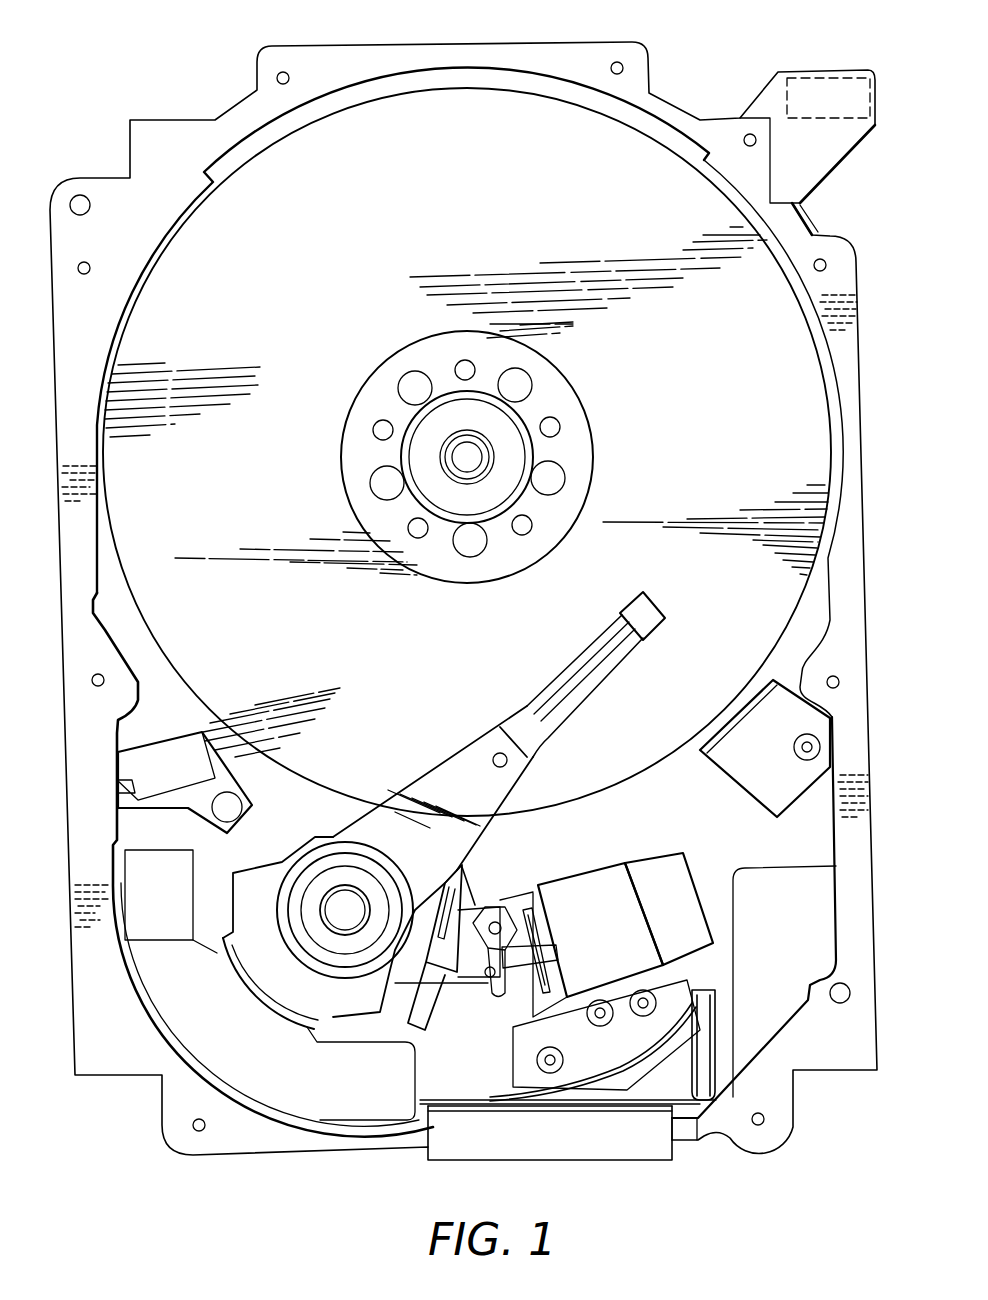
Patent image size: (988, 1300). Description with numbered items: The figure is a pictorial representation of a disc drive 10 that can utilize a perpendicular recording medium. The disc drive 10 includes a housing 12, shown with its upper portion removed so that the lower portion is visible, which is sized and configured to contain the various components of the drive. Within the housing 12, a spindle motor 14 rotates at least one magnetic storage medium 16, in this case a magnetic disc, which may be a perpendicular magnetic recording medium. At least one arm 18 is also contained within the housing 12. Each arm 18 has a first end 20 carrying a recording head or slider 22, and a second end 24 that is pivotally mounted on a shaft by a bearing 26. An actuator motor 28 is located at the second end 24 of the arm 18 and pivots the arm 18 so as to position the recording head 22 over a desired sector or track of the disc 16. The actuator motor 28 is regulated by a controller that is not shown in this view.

The disc drive 10 is at (104, 106).
The base deck 12 is at (597, 55).
The spindle motor 14 is at (462, 460).
The disc 16 is at (370, 240).
The actuator arm 18 is at (462, 777).
The flexure suspension 20 is at (583, 650).
The read/write head 22 is at (642, 613).
The actuator body 24 is at (370, 843).
The pivot bearing 26 is at (333, 898).
The voice coil motor region 28 is at (236, 1038).